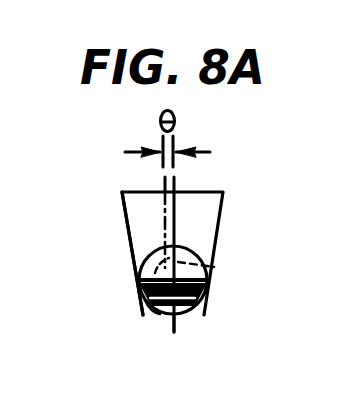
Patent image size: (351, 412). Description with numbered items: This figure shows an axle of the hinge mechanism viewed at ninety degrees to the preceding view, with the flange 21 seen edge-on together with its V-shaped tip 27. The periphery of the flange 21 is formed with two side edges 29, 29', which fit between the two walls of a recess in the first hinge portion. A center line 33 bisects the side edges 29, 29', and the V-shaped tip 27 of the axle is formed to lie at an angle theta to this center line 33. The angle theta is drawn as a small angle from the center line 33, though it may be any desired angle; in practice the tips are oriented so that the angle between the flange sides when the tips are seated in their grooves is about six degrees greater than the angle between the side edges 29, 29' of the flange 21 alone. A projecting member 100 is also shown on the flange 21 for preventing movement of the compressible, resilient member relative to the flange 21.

The flange 21 is at (148, 232).
The V-shaped tip 27 is at (144, 308).
The side edge 29 is at (214, 242).
The side edge 29' is at (88, 253).
The center line 33 is at (172, 322).
The projecting member 100 is at (215, 265).
The angle Θ theta is at (167, 139).